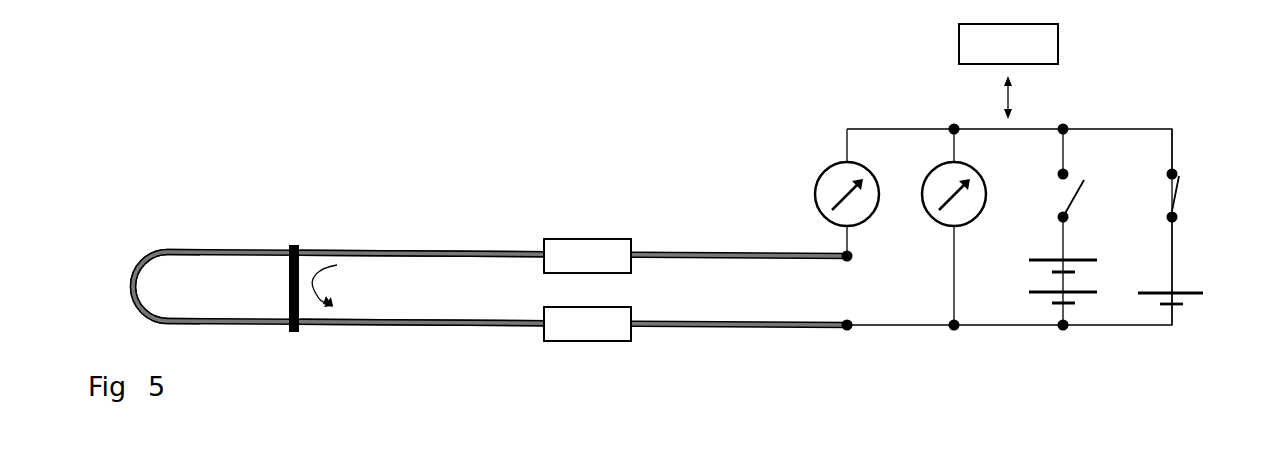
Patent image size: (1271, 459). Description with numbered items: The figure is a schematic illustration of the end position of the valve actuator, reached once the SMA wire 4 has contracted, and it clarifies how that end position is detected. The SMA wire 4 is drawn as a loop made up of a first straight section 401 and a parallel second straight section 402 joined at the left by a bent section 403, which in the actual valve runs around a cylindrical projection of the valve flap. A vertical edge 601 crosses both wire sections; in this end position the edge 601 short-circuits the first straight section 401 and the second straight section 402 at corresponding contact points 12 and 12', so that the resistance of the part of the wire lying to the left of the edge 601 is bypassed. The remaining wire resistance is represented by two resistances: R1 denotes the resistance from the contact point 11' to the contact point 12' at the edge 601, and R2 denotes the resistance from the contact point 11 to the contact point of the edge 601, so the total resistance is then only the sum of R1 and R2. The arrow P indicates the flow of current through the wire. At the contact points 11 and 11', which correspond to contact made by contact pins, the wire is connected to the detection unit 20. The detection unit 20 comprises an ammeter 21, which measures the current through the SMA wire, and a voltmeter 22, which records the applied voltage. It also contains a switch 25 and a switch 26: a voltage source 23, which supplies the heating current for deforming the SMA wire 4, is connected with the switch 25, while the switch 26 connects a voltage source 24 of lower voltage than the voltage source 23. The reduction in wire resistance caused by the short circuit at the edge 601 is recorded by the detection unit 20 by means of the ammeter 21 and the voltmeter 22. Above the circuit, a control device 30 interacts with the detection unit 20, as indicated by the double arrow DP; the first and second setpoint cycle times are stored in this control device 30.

The SMA wire 4 is at (690, 238).
The first straight section 401 is at (458, 249).
The second straight section 402 is at (441, 330).
The bent section 403 is at (132, 270).
The contact point 12 is at (253, 310).
The contact point 12' is at (283, 224).
The edge 601 is at (290, 277).
The contact point 11 is at (864, 359).
The contact point 11' is at (816, 240).
The detection unit 20 is at (1184, 130).
The ammeter 21 is at (870, 216).
The voltmeter 22 is at (976, 222).
The voltage source 23 is at (1078, 257).
The voltage source 24 is at (1191, 286).
The switch 25 is at (1075, 195).
The switch 26 is at (1180, 196).
The control device 30 is at (1058, 44).
The resistance R1 is at (587, 256).
The resistance R2 is at (587, 324).
The arrows P is at (313, 283).
The double arrow DP is at (1004, 96).